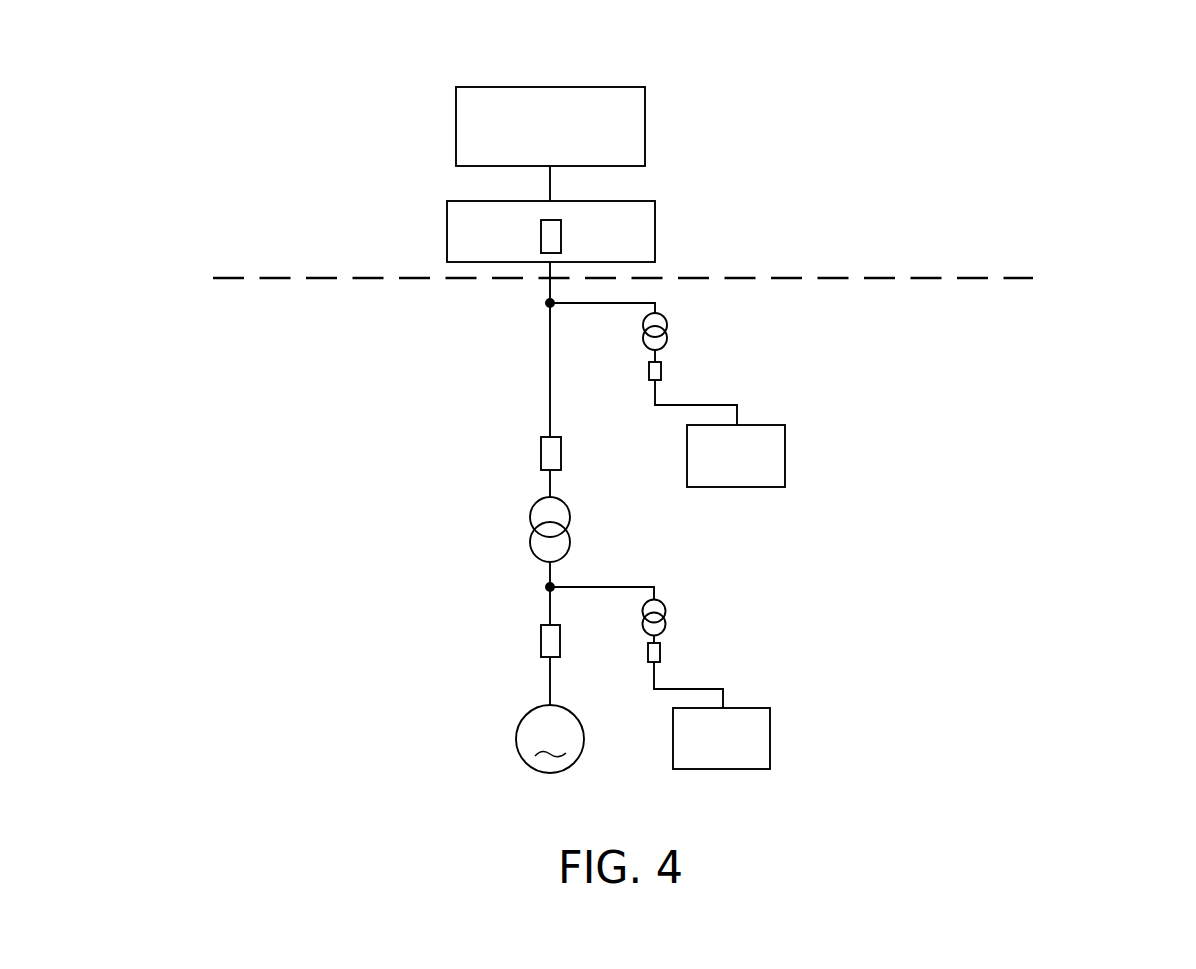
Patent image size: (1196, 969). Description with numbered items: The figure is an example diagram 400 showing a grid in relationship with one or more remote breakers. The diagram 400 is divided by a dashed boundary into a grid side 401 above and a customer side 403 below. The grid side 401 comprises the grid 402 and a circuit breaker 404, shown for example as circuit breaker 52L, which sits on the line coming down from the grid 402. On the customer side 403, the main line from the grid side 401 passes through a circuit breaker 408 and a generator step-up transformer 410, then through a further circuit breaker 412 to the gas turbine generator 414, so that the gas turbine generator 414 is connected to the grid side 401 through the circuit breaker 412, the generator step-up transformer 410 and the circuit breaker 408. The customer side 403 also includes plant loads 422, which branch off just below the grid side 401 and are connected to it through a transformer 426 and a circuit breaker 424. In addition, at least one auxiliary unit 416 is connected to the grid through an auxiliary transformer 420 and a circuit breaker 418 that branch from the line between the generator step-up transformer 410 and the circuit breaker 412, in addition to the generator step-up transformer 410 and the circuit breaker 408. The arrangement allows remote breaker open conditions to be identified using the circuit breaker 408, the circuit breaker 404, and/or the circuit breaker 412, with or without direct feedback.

The diagram 400 is at (1112, 68).
The grid side 401 is at (858, 138).
The grid 402 is at (456, 125).
The customer side 403 is at (858, 343).
The circuit breaker 404 is at (447, 229).
The circuit breaker 52L is at (541, 240).
The circuit breaker 408 is at (541, 452).
The generator step-up transformer 410 is at (533, 517).
The circuit breaker 412 is at (542, 637).
The gas turbine generator 414 is at (522, 735).
The auxiliary unit 416 is at (721, 738).
The circuit breaker 418 is at (660, 652).
The auxiliary transformer 420 is at (658, 602).
The plant loads 422 is at (736, 456).
The circuit breaker 424 is at (649, 368).
The transformer 426 is at (645, 336).